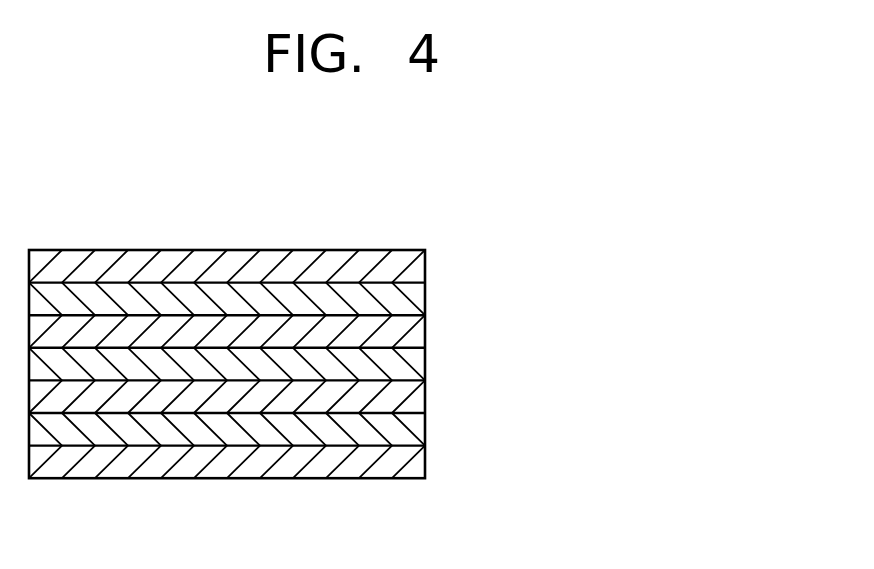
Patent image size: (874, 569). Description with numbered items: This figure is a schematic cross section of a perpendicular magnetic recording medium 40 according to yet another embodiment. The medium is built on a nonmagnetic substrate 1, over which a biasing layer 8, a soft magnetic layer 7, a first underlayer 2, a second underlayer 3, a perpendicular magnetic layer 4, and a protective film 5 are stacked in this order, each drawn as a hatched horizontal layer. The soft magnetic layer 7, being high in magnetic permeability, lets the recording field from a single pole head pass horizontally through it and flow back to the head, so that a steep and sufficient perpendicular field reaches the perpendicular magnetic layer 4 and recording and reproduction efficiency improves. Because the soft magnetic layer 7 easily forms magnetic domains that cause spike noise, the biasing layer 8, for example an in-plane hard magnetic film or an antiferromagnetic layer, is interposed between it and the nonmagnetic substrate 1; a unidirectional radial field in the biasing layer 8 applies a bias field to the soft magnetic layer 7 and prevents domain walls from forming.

The perpendicular magnetic recording medium 40 is at (243, 227).
The protective film 5 is at (397, 259).
The perpendicular magnetic layer 4 is at (397, 295).
The second underlayer 3 is at (397, 327).
The first underlayer 2 is at (397, 358).
The soft magnetic layer 7 is at (397, 390).
The biasing layer 8 is at (397, 428).
The nonmagnetic substrate 1 is at (397, 463).